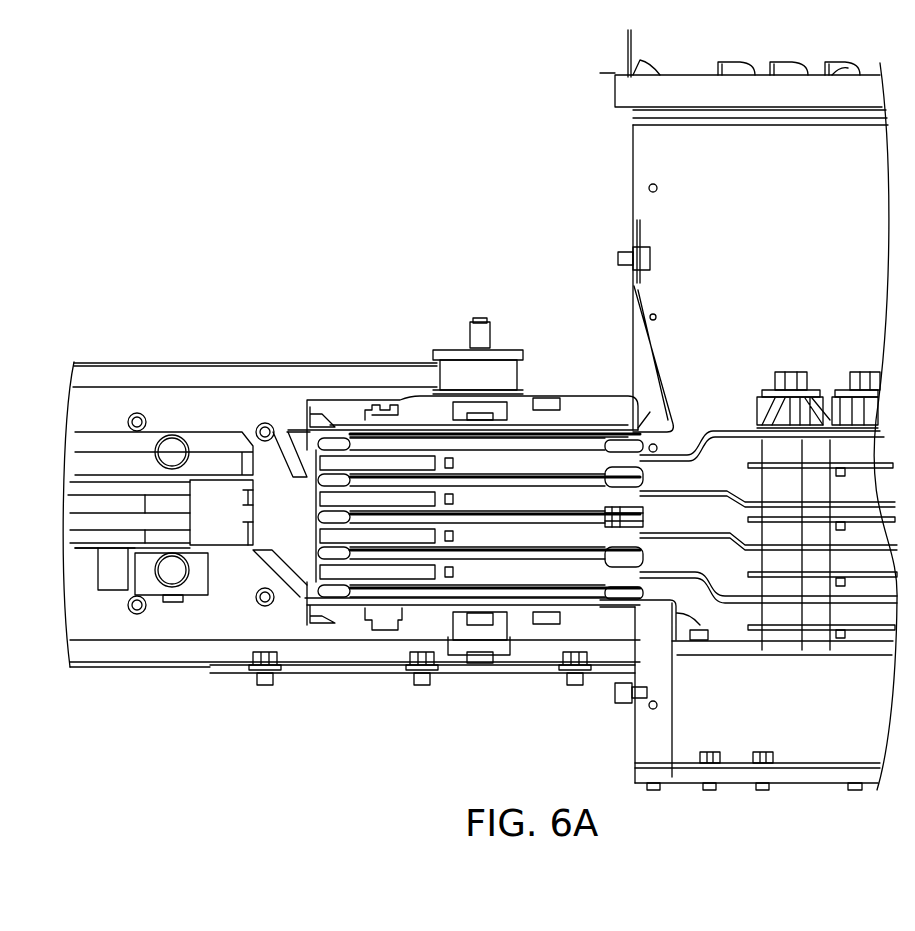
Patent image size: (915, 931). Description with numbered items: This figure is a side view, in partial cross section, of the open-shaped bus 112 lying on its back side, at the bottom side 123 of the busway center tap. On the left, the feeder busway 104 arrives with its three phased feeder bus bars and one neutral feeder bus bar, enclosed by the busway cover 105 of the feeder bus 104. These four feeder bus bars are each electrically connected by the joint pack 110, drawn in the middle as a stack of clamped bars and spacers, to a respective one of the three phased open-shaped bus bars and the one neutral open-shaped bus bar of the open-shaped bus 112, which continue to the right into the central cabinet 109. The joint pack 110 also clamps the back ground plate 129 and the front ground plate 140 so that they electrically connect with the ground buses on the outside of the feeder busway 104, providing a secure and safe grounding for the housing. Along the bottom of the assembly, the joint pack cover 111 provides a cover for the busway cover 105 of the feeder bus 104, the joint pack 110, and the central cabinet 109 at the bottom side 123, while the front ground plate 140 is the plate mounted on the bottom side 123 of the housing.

The feeder busway 104 is at (115, 542).
The busway cover 105 is at (165, 368).
The central cabinet 109 is at (575, 66).
The joint pack 110 is at (428, 612).
The joint pack cover 111 is at (535, 672).
The open-shaped bus 112 is at (700, 600).
The bottom side 123 is at (643, 203).
The back ground plate 129 is at (677, 613).
The front ground plate 140 is at (658, 374).